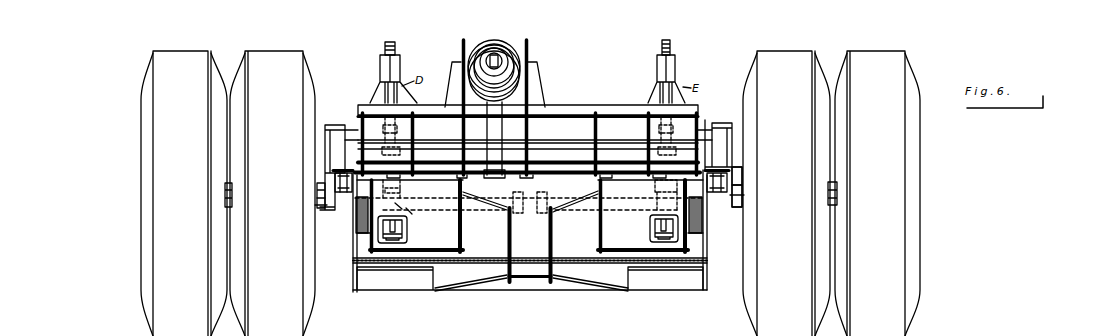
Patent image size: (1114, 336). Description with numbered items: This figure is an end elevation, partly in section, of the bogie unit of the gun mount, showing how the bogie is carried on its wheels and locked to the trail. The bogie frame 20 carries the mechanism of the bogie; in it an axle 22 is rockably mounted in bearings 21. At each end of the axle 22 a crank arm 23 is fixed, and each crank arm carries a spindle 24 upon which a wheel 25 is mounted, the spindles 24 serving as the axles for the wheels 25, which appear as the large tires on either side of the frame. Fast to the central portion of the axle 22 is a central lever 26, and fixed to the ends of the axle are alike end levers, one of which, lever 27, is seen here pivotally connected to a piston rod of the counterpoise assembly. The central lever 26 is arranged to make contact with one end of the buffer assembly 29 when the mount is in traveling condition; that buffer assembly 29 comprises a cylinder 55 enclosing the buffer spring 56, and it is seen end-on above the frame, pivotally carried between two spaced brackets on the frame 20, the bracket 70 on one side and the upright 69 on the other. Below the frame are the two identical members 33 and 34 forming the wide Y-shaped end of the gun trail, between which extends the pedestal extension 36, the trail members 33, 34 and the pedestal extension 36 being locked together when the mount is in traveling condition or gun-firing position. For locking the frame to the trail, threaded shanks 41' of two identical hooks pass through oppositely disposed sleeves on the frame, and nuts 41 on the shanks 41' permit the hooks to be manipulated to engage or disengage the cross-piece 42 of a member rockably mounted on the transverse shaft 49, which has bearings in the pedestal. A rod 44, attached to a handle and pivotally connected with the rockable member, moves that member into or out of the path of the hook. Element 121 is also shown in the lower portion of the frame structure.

The frame 20 is at (594, 107).
The bearings 21 is at (358, 117).
The axle 22 is at (576, 174).
The crank arm 23 is at (318, 190).
The spindles 24 is at (318, 198).
The wheels 25 is at (245, 58).
The lever 26 is at (500, 125).
The lever 27 is at (343, 196).
The buffer assembly 29 is at (483, 43).
The member of the Y-shaped trail end 33 is at (681, 240).
The member of the Y-shaped trail end 34 is at (373, 235).
The pedestal extension 36 is at (552, 243).
The nuts 41 is at (524, 79).
The threaded shanks 41' is at (528, 41).
The cross-piece 42 is at (412, 213).
The rod 44 is at (405, 236).
The transverse shaft 49 is at (472, 205).
The cylinder 55 is at (507, 46).
The buffer spring 56 is at (495, 45).
The right upright post 69 is at (529, 53).
The bracket 70 is at (461, 53).
The bottom frame box 121 is at (407, 284).